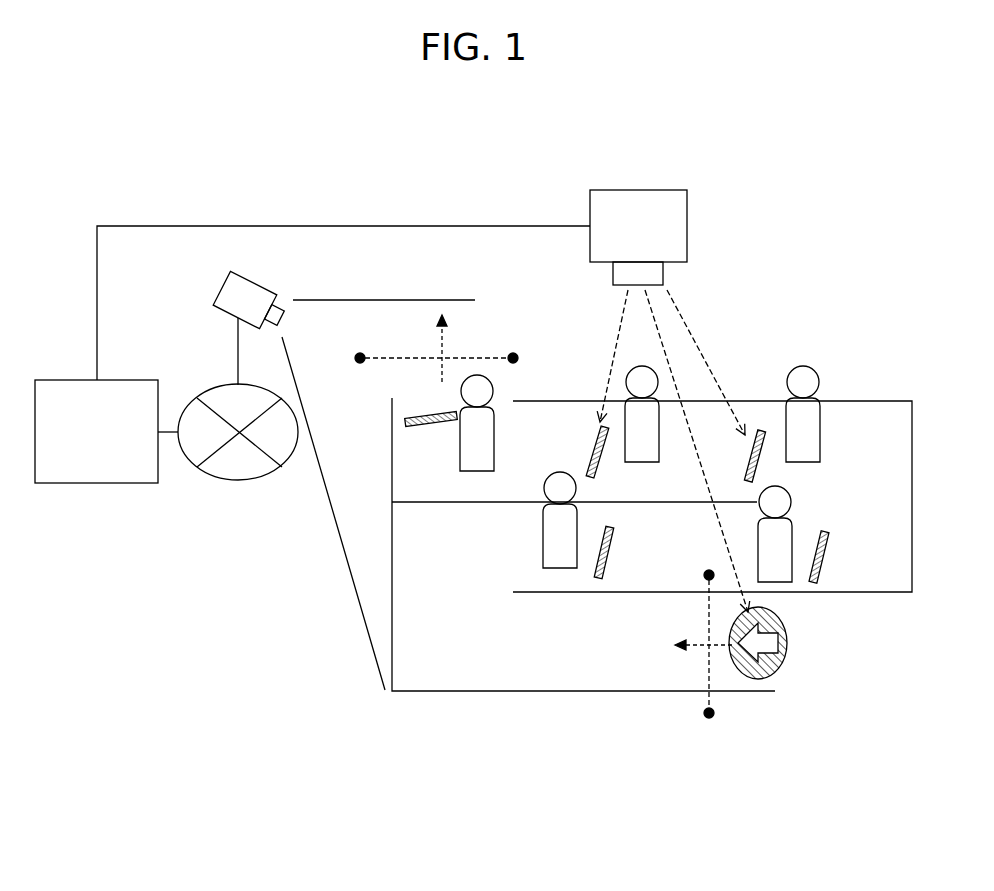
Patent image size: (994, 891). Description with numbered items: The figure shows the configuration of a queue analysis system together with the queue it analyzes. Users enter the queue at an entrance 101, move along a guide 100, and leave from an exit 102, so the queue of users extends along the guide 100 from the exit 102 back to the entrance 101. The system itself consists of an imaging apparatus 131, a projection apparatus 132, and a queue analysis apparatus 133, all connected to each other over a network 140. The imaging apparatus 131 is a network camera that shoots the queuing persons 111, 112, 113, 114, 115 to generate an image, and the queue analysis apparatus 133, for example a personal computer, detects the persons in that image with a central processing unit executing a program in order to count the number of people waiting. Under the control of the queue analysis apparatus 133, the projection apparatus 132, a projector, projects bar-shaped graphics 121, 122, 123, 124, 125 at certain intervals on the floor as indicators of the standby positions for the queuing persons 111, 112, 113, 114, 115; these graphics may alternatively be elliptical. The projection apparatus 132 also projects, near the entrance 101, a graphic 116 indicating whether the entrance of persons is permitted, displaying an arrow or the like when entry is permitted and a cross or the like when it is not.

The guide 100 is at (868, 399).
The entrance 101 is at (708, 668).
The exit 102 is at (487, 358).
The queuing person 111 is at (494, 453).
The queuing person 112 is at (648, 458).
The queuing person 113 is at (817, 375).
The queuing person 114 is at (793, 523).
The queuing person 115 is at (544, 542).
The graphic indicating whether entrance is permitted 116 is at (780, 655).
The graphic indicating standby position 121 is at (430, 412).
The graphic indicating standby position 122 is at (590, 462).
The graphic indicating standby position 123 is at (752, 470).
The graphic indicating standby position 124 is at (827, 557).
The graphic indicating standby position 125 is at (610, 550).
The imaging apparatus 131 is at (217, 313).
The projection apparatus 132 is at (687, 235).
The queue analysis apparatus 133 is at (85, 485).
The network 140 is at (238, 482).